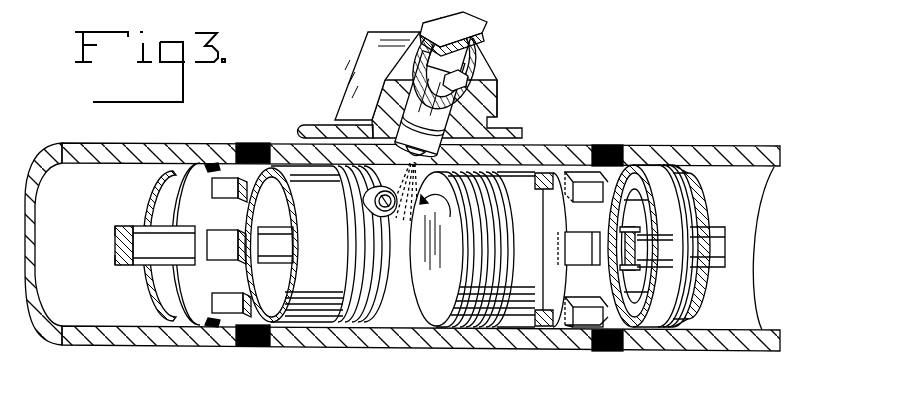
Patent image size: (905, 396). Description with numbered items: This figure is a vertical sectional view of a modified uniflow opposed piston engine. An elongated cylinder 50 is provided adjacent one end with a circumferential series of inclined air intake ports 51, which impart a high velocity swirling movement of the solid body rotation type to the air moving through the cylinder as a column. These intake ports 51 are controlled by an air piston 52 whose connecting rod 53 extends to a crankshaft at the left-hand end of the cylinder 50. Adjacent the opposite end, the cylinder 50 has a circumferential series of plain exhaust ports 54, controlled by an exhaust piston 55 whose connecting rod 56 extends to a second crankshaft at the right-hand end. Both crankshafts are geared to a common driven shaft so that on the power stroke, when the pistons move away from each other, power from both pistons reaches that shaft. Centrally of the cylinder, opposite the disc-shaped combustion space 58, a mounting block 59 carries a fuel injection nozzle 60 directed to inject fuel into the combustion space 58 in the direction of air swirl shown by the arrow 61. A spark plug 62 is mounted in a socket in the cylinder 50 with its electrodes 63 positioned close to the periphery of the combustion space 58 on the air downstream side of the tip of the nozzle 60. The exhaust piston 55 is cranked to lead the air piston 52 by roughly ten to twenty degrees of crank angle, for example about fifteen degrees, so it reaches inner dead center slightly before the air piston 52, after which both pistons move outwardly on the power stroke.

The cylinder 50 is at (366, 347).
The air intake ports 51 is at (268, 122).
The air piston 52 is at (295, 182).
The connecting rod 53 is at (136, 227).
The exhaust ports 54 is at (605, 153).
The exhaust piston 55 is at (527, 182).
The connecting rod 56 is at (709, 227).
The combustion space 58 is at (405, 318).
The mounting block 59 is at (487, 75).
The fuel injection nozzle 60 is at (473, 58).
The arrow 61 is at (444, 208).
The spark plug 62 is at (373, 207).
The electrodes 63 is at (382, 203).